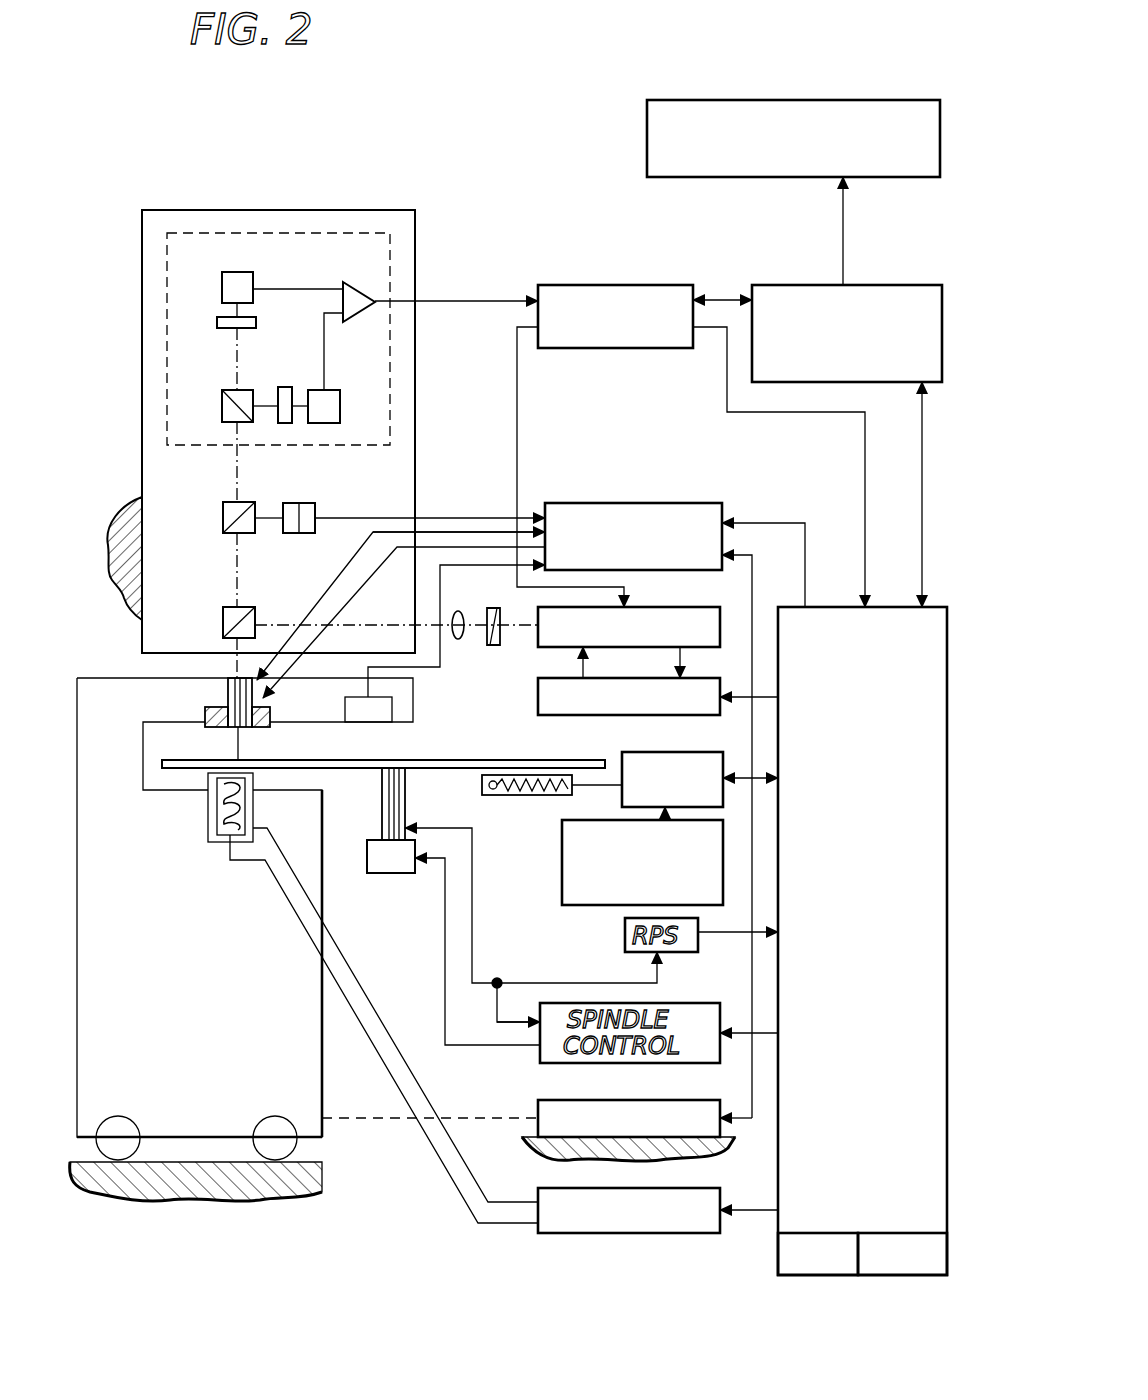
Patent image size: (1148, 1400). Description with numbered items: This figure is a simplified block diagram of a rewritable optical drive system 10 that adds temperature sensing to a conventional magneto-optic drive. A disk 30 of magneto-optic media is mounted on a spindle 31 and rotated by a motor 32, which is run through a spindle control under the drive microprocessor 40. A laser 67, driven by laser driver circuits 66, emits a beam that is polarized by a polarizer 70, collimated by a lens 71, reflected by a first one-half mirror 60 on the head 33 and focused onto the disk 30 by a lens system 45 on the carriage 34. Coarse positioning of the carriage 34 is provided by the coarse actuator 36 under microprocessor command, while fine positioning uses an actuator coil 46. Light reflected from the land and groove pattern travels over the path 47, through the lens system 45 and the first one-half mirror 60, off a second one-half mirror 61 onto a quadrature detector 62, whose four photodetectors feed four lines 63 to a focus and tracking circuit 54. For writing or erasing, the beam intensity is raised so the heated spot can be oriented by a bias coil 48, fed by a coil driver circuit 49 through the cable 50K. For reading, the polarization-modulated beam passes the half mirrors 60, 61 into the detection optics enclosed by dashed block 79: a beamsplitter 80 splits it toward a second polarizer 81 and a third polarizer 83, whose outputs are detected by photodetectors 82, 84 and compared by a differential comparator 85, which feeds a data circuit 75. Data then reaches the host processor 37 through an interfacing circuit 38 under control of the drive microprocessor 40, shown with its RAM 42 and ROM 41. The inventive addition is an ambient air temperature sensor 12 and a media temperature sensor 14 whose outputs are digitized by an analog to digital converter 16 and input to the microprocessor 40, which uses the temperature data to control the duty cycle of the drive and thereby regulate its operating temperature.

The rewritable optical drive system 10 is at (248, 168).
The ambient air temperature sensor 12 is at (562, 872).
The media temperature sensor 14 is at (538, 795).
The analog to digital converter 16 is at (665, 752).
The disk 30 is at (352, 768).
The spindle 31 is at (405, 796).
The motor 32 is at (393, 873).
The head 33 is at (142, 312).
The carriage 34 is at (328, 1127).
The coarse actuator 36 is at (548, 1100).
The host processor 37 is at (647, 114).
The interfacing circuit 38 is at (782, 285).
The drive microprocessor 40 is at (868, 988).
The ROM 41 is at (912, 1275).
The RAM 42 is at (822, 1275).
The lens system 45 is at (228, 690).
The actuator coil 46 is at (270, 712).
The path 47 is at (235, 748).
The bias coil 48 is at (208, 818).
The coil driver circuit 49 is at (625, 1233).
The cable 50K is at (465, 1203).
The focus and tracking circuit 54 is at (632, 503).
The first one-half mirror 60 is at (223, 624).
The second one-half mirror 61 is at (223, 511).
The quadrature detector 62 is at (300, 503).
The lines 63 is at (476, 518).
The laser driver circuits 66 is at (600, 715).
The laser 67 is at (650, 607).
The polarizer 70 is at (492, 608).
The lens 71 is at (458, 640).
The data circuit 75 is at (590, 285).
The detector circuit 79 is at (243, 273).
The beamsplitter 80 is at (222, 408).
The second polarizer 81 is at (284, 372).
The photodetector 82 is at (340, 406).
The third polarizer 83 is at (217, 322).
The photodetector 84 is at (224, 272).
The differential comparator 85 is at (345, 286).